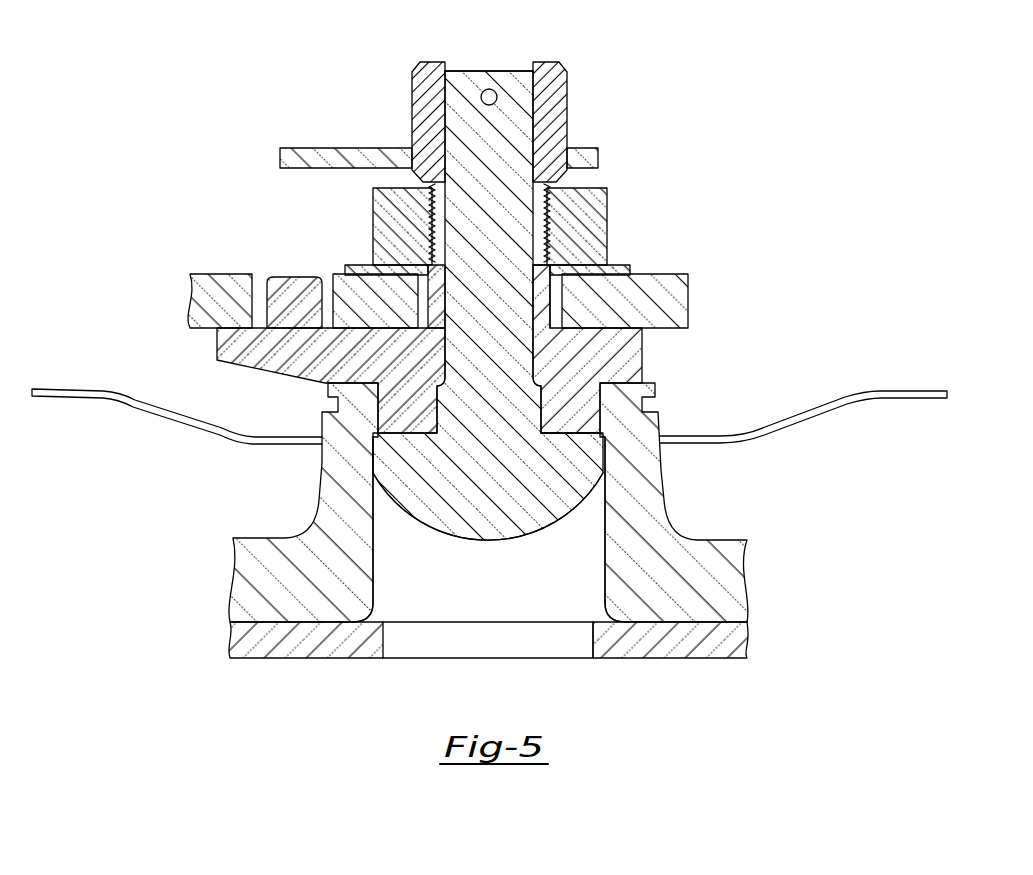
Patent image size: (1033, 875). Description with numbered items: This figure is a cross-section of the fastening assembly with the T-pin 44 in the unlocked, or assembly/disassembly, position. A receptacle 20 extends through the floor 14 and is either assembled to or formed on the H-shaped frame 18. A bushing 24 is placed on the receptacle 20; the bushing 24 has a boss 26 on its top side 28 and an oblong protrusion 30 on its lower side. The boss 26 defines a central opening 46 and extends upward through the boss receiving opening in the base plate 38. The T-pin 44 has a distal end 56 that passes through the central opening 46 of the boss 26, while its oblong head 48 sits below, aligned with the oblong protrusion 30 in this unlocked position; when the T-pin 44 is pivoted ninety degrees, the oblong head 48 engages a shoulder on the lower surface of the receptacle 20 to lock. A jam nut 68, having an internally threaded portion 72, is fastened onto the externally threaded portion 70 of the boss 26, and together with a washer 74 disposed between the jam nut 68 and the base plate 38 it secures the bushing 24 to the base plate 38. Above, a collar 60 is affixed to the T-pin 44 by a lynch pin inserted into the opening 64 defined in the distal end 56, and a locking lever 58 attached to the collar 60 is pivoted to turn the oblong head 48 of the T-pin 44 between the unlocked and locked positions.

The floor 14 is at (788, 417).
The H-shaped frame 18 is at (685, 647).
The receptacle 20 is at (735, 588).
The bushing 24 is at (633, 367).
The boss 26 is at (533, 272).
The top side 28 is at (220, 322).
The oblong protrusion 30 is at (570, 433).
The base plate 38 is at (683, 300).
The T-pin 44 is at (500, 543).
The central opening 46 is at (445, 310).
The oblong head 48 is at (413, 490).
The distal end 56 is at (520, 70).
The locking lever 58 is at (319, 157).
The collar 60 is at (420, 98).
The opening 64 is at (489, 88).
The jam nut 68 is at (378, 210).
The externally threaded portion 70 is at (440, 250).
The internally threaded portion 72 is at (545, 228).
The washer 74 is at (624, 265).